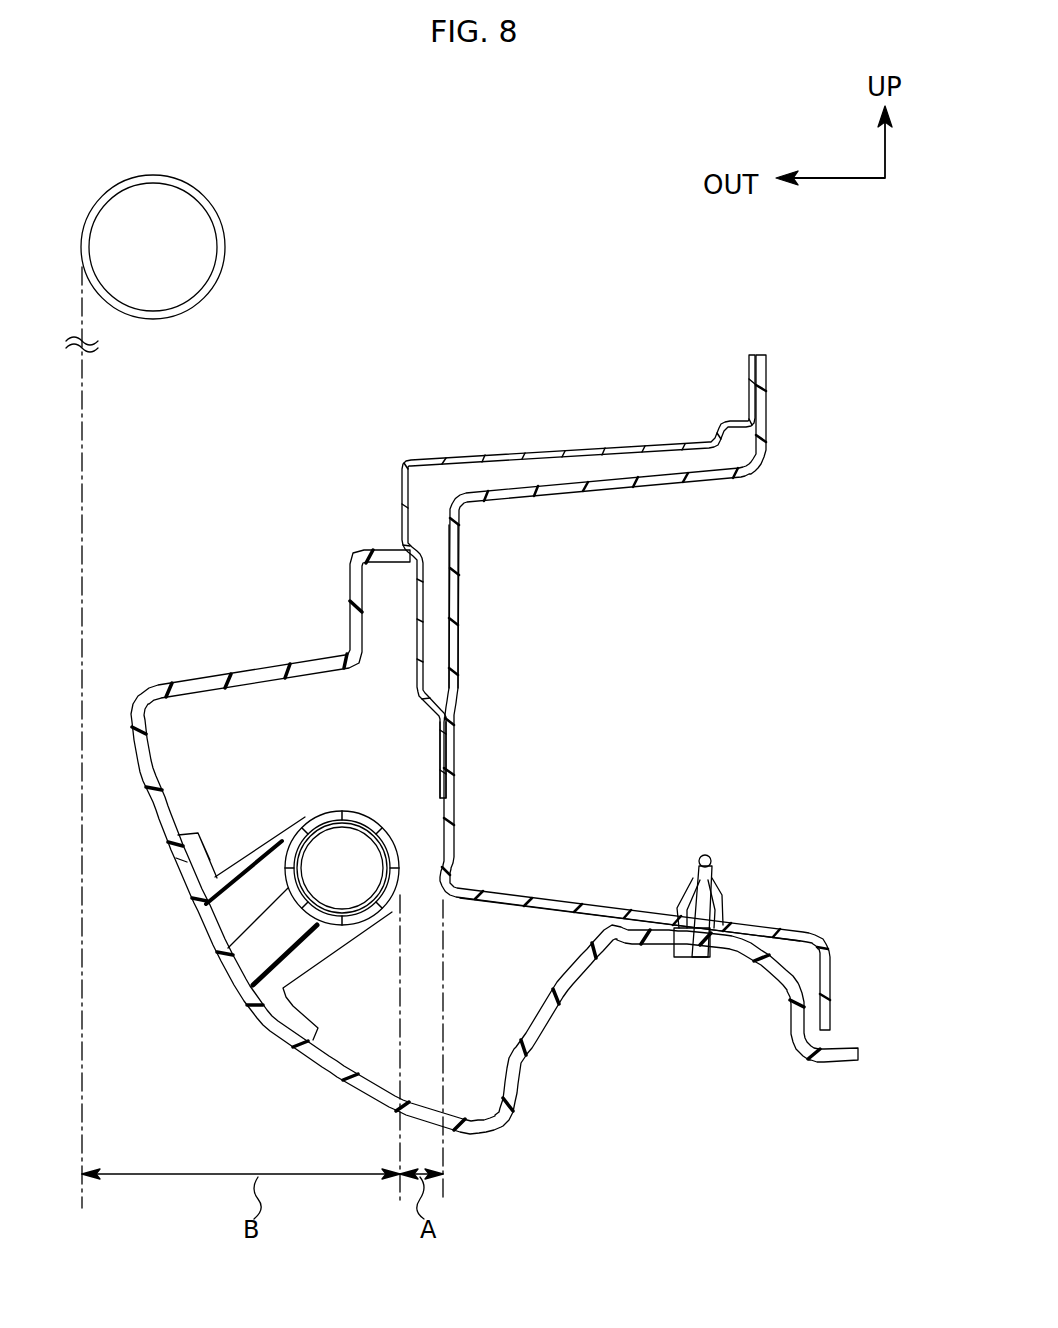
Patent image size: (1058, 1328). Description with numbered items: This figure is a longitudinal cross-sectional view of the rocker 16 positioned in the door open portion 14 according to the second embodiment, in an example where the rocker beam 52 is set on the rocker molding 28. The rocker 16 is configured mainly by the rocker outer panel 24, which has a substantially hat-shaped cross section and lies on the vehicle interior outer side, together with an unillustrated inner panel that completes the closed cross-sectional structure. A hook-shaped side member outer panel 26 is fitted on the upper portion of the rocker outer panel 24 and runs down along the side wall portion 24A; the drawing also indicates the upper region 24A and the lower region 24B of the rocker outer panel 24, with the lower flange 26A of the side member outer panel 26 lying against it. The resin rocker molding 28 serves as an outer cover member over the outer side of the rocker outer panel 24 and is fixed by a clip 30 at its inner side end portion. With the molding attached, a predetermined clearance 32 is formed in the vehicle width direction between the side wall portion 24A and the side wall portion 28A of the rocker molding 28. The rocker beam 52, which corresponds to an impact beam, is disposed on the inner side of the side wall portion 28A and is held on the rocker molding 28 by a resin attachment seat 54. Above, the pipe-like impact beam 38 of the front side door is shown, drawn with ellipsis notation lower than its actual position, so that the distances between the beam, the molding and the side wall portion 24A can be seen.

The door open portion 14 is at (569, 324).
The rocker 16 is at (460, 680).
The rocker outer panel 24 is at (635, 692).
The side wall portion 24A is at (456, 628).
The lower portion of reinforcement 24B is at (515, 895).
The side member outer panel 26 is at (517, 451).
The flange of outer panel 26A is at (438, 755).
The rocker molding 28 is at (218, 966).
The side wall portion 28A is at (247, 999).
The clip 30 is at (688, 957).
The clearance 32 is at (270, 776).
The impact beam 38 is at (220, 227).
The rocker beam 52 is at (318, 826).
The attachment seat 54 is at (320, 946).